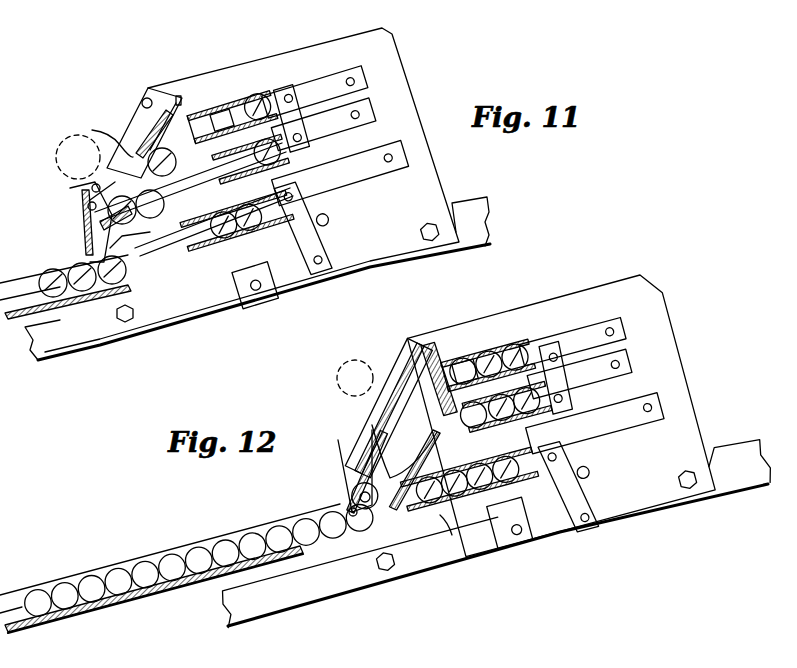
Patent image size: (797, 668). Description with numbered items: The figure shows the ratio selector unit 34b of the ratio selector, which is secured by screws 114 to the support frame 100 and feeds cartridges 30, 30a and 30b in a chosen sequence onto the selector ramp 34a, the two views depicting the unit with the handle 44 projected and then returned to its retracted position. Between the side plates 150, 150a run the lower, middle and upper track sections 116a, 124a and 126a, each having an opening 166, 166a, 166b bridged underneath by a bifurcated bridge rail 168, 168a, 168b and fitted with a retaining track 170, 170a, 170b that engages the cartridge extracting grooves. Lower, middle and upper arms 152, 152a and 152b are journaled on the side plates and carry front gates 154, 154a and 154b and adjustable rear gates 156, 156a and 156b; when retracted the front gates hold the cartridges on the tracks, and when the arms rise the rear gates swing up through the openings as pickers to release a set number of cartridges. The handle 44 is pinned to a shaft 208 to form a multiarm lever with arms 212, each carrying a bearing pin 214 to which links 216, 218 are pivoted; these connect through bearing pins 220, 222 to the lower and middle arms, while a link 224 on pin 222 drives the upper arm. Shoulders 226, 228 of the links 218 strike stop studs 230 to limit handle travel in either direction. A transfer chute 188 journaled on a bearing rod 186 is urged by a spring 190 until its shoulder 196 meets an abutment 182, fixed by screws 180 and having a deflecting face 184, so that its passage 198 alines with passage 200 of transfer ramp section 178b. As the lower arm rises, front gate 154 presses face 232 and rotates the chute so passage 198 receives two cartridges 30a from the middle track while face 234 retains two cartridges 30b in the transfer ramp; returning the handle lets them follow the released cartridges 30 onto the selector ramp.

In FIG. 11, the armor piercing cartridge 30 is at (68, 300).
In FIG. 12, the armor piercing cartridge 30 is at (266, 535).
In FIG. 11, the high explosive incendiary cartridge 30a is at (310, 100).
In FIG. 12, the high explosive incendiary cartridge 30a is at (147, 570).
In FIG. 11, the incendiary cartridge 30b is at (272, 88).
In FIG. 12, the incendiary cartridge 30b is at (200, 554).
In FIG. 11, the selector ramp 34a is at (17, 322).
In FIG. 12, the selector ramp 34a is at (148, 608).
In FIG. 11, the ratio selector unit 34b is at (172, 52).
In FIG. 12, the ratio selector unit 34b is at (425, 327).
In FIG. 11, the handle 44 is at (232, 283).
In FIG. 12, the handle 44 is at (337, 376).
In FIG. 11, the support frame 100 is at (82, 353).
In FIG. 12, the support frame 100 is at (300, 608).
In FIG. 11, the screw 114 is at (438, 242).
In FIG. 12, the screw 114 is at (695, 490).
In FIG. 11, the lower track section 116a is at (275, 273).
In FIG. 12, the lower track section 116a is at (355, 543).
In FIG. 11, the middle track section 124a is at (213, 176).
In FIG. 12, the middle track section 124a is at (441, 401).
In FIG. 11, the upper track section 126a is at (280, 87).
In FIG. 12, the upper track section 126a is at (457, 366).
In FIG. 11, the side plate 150 is at (322, 42).
In FIG. 12, the side plate 150 is at (572, 293).
In FIG. 11, the side plate 150a is at (215, 66).
In FIG. 12, the side plate 150a is at (482, 322).
In FIG. 11, the lower arm 152 is at (373, 180).
In FIG. 12, the lower arm 152 is at (640, 432).
In FIG. 11, the middle arm 152a is at (360, 128).
In FIG. 12, the middle arm 152a is at (630, 390).
In FIG. 11, the upper arm 152b is at (333, 75).
In FIG. 12, the upper arm 152b is at (590, 335).
In FIG. 11, the lower front gate 154 is at (97, 310).
In FIG. 12, the lower front gate 154 is at (385, 528).
In FIG. 11, the middle front gate 154a is at (130, 140).
In FIG. 12, the middle front gate 154a is at (443, 378).
In FIG. 11, the upper front gate 154b is at (180, 94).
In FIG. 12, the upper front gate 154b is at (420, 343).
In FIG. 11, the lower rear gate 156 is at (200, 272).
In FIG. 12, the lower rear gate 156 is at (480, 540).
In FIG. 11, the middle rear gate 156a is at (303, 160).
In FIG. 12, the middle rear gate 156a is at (570, 428).
In FIG. 11, the upper rear gate 156b is at (245, 100).
In FIG. 12, the upper rear gate 156b is at (552, 350).
In FIG. 11, the opening 166 is at (168, 307).
In FIG. 12, the opening 166 is at (422, 522).
In FIG. 11, the opening 166a is at (295, 190).
In FIG. 12, the opening 166a is at (470, 480).
In FIG. 11, the opening 166b is at (223, 132).
In FIG. 12, the opening 166b is at (490, 372).
In FIG. 11, the bridge rail 168 is at (187, 307).
In FIG. 12, the bridge rail 168 is at (437, 530).
In FIG. 11, the bridge rail 168a is at (322, 213).
In FIG. 12, the bridge rail 168a is at (573, 455).
In FIG. 11, the bridge rail 168b is at (178, 108).
In FIG. 12, the bridge rail 168b is at (508, 330).
In FIG. 11, the retaining track 170 is at (157, 248).
In FIG. 12, the retaining track 170 is at (345, 470).
In FIG. 11, the retaining track 170a is at (246, 166).
In FIG. 12, the retaining track 170a is at (470, 430).
In FIG. 11, the retaining track 170b is at (213, 100).
In FIG. 12, the retaining track 170b is at (470, 340).
In FIG. 11, the transfer ramp section 178b is at (136, 134).
In FIG. 12, the transfer ramp section 178b is at (410, 375).
In FIG. 11, the screw 180 is at (95, 192).
In FIG. 12, the screw 180 is at (372, 445).
In FIG. 11, the abutment 182 is at (82, 205).
In FIG. 12, the abutment 182 is at (345, 460).
In FIG. 11, the deflecting face 184 is at (83, 257).
In FIG. 11, the bearing rod 186 is at (115, 245).
In FIG. 12, the bearing rod 186 is at (382, 490).
In FIG. 11, the transfer chute 188 is at (99, 137).
In FIG. 12, the transfer chute 188 is at (448, 530).
In FIG. 11, the spring 190 is at (120, 157).
In FIG. 12, the spring 190 is at (405, 432).
In FIG. 11, the shoulder 196 is at (100, 182).
In FIG. 11, the passage 198 is at (102, 230).
In FIG. 12, the passage 198 is at (372, 450).
In FIG. 11, the passage 200 is at (145, 99).
In FIG. 12, the passage 200 is at (395, 395).
In FIG. 11, the shaft 208 is at (267, 297).
In FIG. 12, the shaft 208 is at (520, 540).
In FIG. 11, the arm 212 is at (283, 282).
In FIG. 12, the arm 212 is at (560, 528).
In FIG. 11, the bearing pin 214 is at (333, 260).
In FIG. 12, the bearing pin 214 is at (597, 530).
In FIG. 11, the link 216 is at (350, 248).
In FIG. 12, the link 216 is at (593, 505).
In FIG. 11, the link 218 is at (340, 152).
In FIG. 12, the link 218 is at (600, 410).
In FIG. 11, the bearing pin 220 is at (332, 185).
In FIG. 12, the bearing pin 220 is at (583, 463).
In FIG. 11, the bearing pin 222 is at (313, 125).
In FIG. 12, the bearing pin 222 is at (565, 390).
In FIG. 11, the link 224 is at (357, 93).
In FIG. 12, the link 224 is at (615, 357).
In FIG. 12, the shoulder 226 is at (590, 487).
In FIG. 11, the shoulder 228 is at (327, 220).
In FIG. 11, the stop stud 230 is at (328, 227).
In FIG. 12, the stop stud 230 is at (595, 475).
In FIG. 11, the face 232 is at (85, 240).
In FIG. 12, the face 234 is at (372, 425).